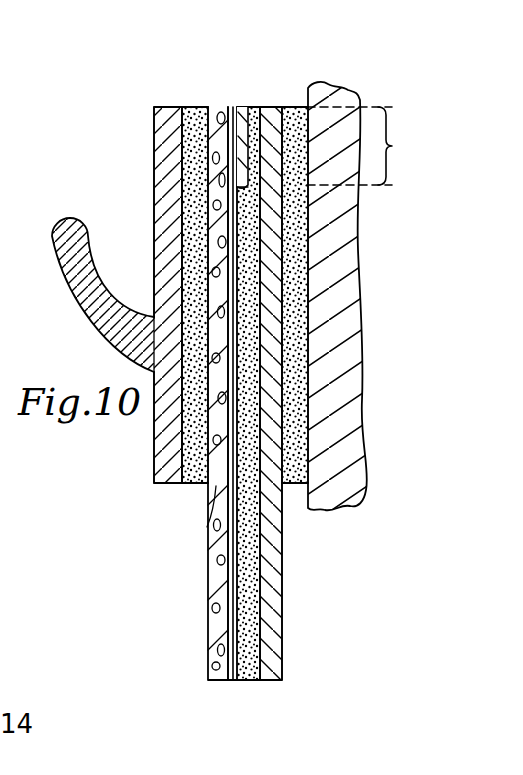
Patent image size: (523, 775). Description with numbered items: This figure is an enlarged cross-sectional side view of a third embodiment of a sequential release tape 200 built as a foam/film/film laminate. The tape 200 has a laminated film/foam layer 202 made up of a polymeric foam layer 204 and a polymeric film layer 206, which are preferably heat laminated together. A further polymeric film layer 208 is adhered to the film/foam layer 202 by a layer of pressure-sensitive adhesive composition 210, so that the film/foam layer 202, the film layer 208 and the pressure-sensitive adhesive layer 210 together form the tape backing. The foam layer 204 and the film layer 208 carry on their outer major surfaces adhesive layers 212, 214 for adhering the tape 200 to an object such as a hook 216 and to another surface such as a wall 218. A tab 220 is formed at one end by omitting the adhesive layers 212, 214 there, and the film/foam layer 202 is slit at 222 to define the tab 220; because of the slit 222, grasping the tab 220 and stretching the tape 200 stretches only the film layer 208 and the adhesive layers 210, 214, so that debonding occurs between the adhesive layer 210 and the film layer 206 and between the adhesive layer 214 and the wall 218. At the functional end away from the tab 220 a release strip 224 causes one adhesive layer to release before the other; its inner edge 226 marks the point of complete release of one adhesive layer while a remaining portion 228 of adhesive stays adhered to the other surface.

The sequential release tape 200 is at (316, 570).
The laminated film/foam layer 202 is at (216, 686).
The polymeric foam layer 204 is at (213, 107).
The polymeric film layer 206 is at (227, 107).
The polymeric film layer 208 is at (272, 683).
The pressure-sensitive adhesive layer 210 is at (256, 683).
The adhesive layer 212 is at (203, 485).
The adhesive layer 214 is at (294, 107).
The hook 216 is at (73, 308).
The wall 218 is at (358, 315).
The tab 220 is at (205, 640).
The slit 222 is at (207, 527).
The release strip 224 is at (239, 107).
The inner edge 226 is at (238, 188).
The remaining portion 228 is at (376, 146).